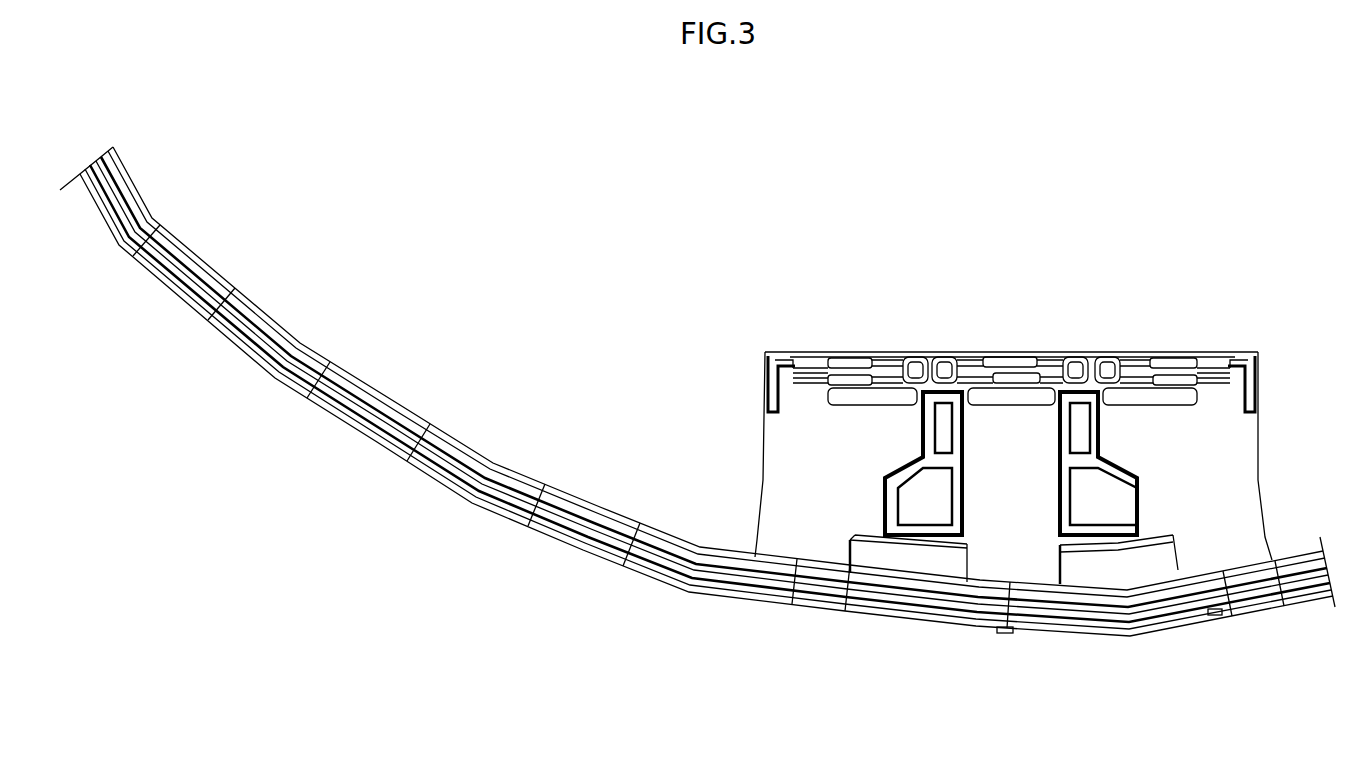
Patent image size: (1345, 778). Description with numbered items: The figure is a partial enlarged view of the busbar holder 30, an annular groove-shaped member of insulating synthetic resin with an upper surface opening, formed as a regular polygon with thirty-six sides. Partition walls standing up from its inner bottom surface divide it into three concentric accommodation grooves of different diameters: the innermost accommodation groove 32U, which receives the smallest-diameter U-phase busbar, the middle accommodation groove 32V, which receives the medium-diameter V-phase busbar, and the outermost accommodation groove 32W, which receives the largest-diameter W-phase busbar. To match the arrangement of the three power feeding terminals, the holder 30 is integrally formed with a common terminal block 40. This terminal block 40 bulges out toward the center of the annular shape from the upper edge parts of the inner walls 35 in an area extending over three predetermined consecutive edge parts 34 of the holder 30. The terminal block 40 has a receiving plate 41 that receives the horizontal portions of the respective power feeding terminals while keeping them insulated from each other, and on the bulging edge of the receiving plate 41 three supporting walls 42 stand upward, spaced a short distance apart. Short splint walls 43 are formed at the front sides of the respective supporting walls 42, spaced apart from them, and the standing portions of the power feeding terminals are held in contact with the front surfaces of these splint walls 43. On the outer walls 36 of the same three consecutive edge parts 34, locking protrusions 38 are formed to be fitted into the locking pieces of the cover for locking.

The holder 30 is at (697, 424).
The innermost accommodation groove 32U is at (474, 462).
The middle accommodation groove 32V is at (501, 490).
The outermost accommodation groove 32W is at (547, 524).
The edge parts 34 is at (757, 606).
The inner walls 35 is at (720, 555).
The outer walls 36 is at (866, 627).
The locking protrusions 38 is at (1227, 618).
The terminal block 40 is at (1042, 434).
The receiving plate 41 is at (1262, 498).
The supporting walls 42 is at (850, 368).
The splint walls 43 is at (872, 378).